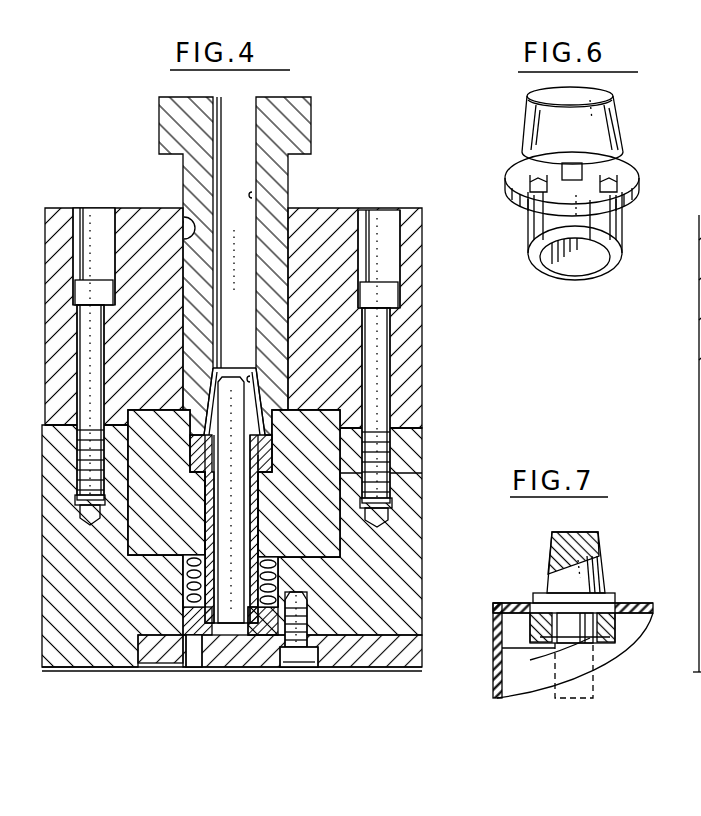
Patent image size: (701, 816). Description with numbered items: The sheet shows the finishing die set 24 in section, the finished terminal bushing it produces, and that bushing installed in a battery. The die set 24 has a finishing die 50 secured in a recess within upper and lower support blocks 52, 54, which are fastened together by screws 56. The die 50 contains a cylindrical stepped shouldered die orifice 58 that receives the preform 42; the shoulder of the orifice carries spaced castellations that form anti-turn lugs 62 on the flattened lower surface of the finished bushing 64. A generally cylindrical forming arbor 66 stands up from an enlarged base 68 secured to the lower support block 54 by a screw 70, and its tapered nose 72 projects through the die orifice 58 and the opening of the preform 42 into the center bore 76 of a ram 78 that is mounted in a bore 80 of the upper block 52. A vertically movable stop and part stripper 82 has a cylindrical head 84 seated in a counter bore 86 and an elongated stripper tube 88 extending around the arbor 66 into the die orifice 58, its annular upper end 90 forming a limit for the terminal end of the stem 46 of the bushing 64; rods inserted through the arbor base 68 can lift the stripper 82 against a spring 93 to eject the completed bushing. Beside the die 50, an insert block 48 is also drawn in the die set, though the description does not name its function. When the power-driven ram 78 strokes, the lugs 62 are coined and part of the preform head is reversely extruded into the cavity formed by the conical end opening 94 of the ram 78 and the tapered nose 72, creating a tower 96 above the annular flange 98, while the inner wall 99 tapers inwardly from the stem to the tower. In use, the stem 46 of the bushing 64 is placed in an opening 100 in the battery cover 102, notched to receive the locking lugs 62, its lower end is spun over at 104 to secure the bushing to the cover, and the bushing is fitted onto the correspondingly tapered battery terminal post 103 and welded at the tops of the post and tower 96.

In FIG. 4, the die set 24 is at (82, 203).
In FIG. 4, the preform 42 is at (262, 462).
In FIG. 6, the stem 46 is at (540, 232).
In FIG. 7, the stem 46 is at (575, 630).
In FIG. 4, the right insert block 48 is at (252, 514).
In FIG. 4, the finishing die 50 is at (340, 479).
In FIG. 4, the upper support block 52 is at (412, 352).
In FIG. 4, the lower support block 54 is at (410, 537).
In FIG. 4, the screws 56 is at (85, 347).
In FIG. 4, the die orifice 58 is at (200, 470).
In FIG. 6, the anti-turn lugs 62 is at (618, 200).
In FIG. 6, the bushing 64 is at (624, 129).
In FIG. 7, the bushing 64 is at (607, 570).
In FIG. 4, the forming arbor 66 is at (246, 566).
In FIG. 4, the base 68 is at (255, 668).
In FIG. 4, the screw 70 is at (313, 620).
In FIG. 4, the tapered nose 72 is at (236, 410).
In FIG. 4, the center bore 76 is at (252, 196).
In FIG. 4, the ram 78 is at (282, 181).
In FIG. 4, the bore 80 is at (188, 214).
In FIG. 4, the stop and part stripper 82 is at (183, 580).
In FIG. 4, the cylindrical head 84 is at (194, 636).
In FIG. 4, the counter bore 86 is at (274, 566).
In FIG. 4, the stripper tube 88 is at (258, 540).
In FIG. 4, the annular upper end 90 is at (212, 510).
In FIG. 4, the spring 93 is at (183, 592).
In FIG. 4, the conical end opening 94 is at (252, 380).
In FIG. 6, the tower 96 is at (535, 120).
In FIG. 6, the annular flange 98 is at (640, 183).
In FIG. 6, the inner wall 99 is at (597, 268).
In FIG. 7, the opening 100 is at (530, 648).
In FIG. 7, the battery cover 102 is at (512, 608).
In FIG. 7, the battery terminal post 103 is at (563, 548).
In FIG. 7, the spun over portion 104 is at (580, 660).